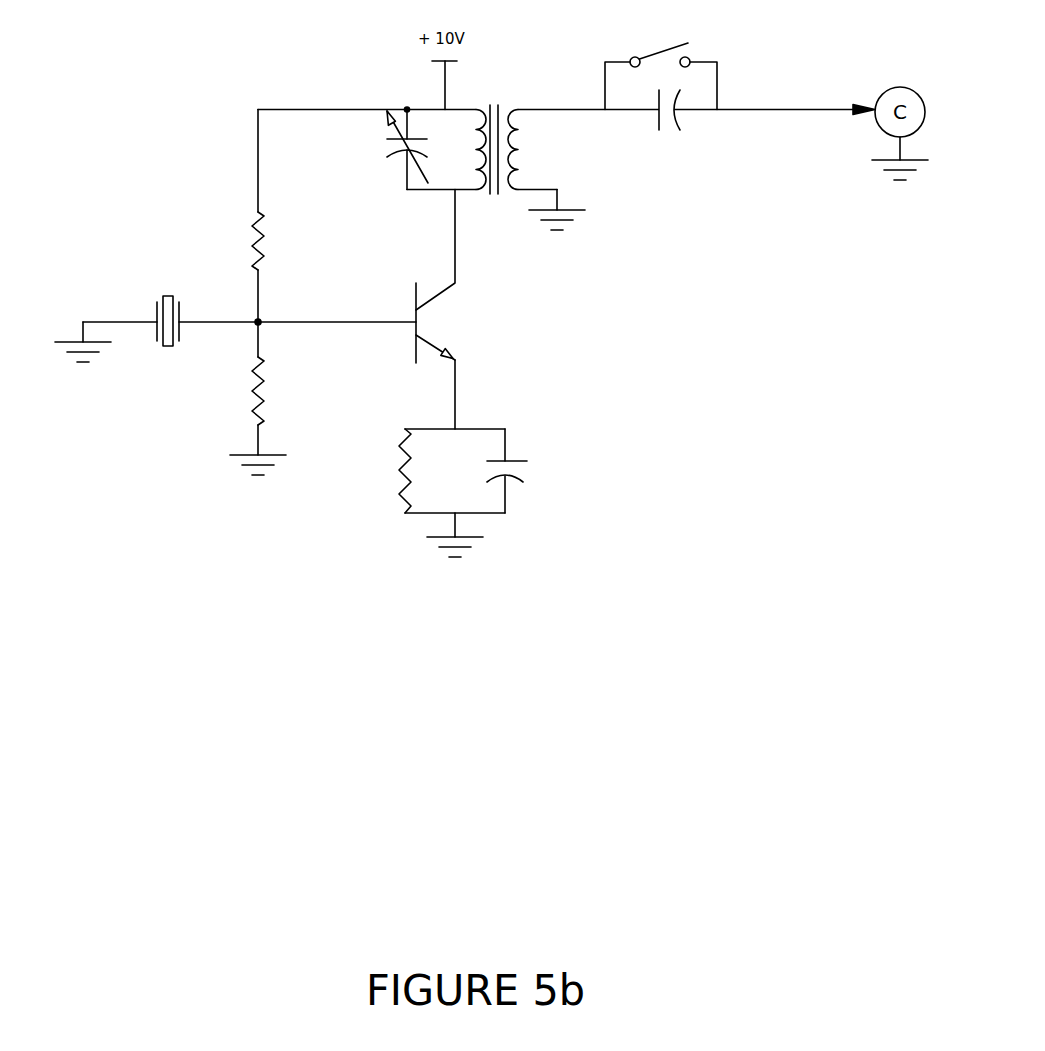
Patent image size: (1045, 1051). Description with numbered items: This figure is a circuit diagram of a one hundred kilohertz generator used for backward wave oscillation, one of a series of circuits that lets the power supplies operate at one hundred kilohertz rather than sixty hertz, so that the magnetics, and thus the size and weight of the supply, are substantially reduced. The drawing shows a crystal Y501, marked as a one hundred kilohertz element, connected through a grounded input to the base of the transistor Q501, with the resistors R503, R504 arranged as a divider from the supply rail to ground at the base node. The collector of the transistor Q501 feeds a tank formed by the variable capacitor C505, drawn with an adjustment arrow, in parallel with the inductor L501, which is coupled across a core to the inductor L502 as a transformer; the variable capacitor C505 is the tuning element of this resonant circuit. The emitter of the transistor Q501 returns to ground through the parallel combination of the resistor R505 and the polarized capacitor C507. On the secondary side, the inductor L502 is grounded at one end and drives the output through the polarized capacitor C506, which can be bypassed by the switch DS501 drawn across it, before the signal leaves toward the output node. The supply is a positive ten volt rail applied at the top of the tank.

The resistor R503 is at (233, 241).
The resistor R504 is at (233, 391).
The resistor R505 is at (377, 471).
The 100 kHz crystal Y501 is at (168, 320).
The transistor Q501 is at (449, 277).
The variable capacitor C505 is at (377, 150).
The polarized capacitor C506 is at (666, 126).
The polarized capacitor C507 is at (533, 471).
The inductor L501 is at (466, 136).
The inductor L502 is at (530, 138).
The switch DS501 is at (661, 63).